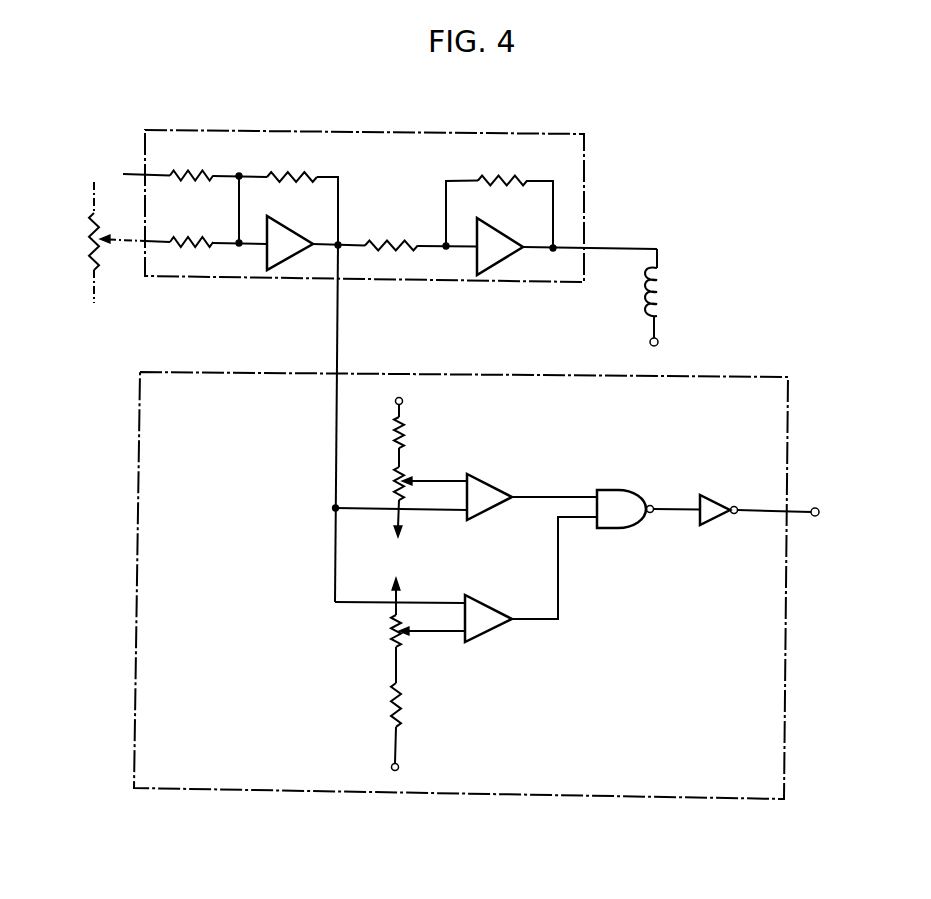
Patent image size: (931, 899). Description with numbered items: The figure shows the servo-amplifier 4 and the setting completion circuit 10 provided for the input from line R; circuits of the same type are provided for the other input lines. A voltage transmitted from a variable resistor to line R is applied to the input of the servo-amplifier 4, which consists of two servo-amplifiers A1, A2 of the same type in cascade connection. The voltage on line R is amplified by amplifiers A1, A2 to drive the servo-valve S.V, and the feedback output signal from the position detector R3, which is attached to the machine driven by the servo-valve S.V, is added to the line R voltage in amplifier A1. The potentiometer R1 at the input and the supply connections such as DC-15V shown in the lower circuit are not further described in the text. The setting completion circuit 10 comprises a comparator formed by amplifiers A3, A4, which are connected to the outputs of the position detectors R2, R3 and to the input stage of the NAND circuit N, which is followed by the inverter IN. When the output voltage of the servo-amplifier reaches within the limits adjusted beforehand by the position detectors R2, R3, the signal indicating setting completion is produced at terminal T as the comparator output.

The servo-amplifier 4 is at (575, 160).
The setting completion circuit 10 is at (683, 780).
The line R is at (222, 203).
The potentiometer R1 is at (117, 242).
The position detector R2 is at (414, 498).
The position detector R3 is at (413, 630).
The servo-amplifier A1 is at (255, 243).
The servo-amplifier A2 is at (511, 226).
The amplifier A3 is at (483, 497).
The amplifier A4 is at (483, 618).
The NAND circuit N is at (648, 509).
The inverter IN is at (703, 521).
The terminal T is at (815, 507).
The servo-valve S.V is at (660, 287).
The negative supply terminal DC-15V is at (440, 731).